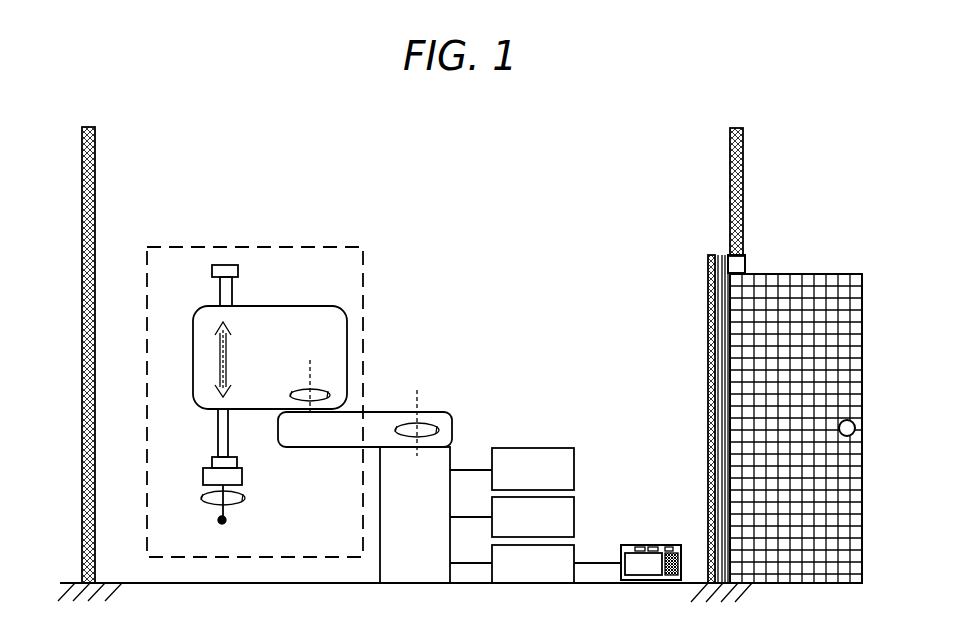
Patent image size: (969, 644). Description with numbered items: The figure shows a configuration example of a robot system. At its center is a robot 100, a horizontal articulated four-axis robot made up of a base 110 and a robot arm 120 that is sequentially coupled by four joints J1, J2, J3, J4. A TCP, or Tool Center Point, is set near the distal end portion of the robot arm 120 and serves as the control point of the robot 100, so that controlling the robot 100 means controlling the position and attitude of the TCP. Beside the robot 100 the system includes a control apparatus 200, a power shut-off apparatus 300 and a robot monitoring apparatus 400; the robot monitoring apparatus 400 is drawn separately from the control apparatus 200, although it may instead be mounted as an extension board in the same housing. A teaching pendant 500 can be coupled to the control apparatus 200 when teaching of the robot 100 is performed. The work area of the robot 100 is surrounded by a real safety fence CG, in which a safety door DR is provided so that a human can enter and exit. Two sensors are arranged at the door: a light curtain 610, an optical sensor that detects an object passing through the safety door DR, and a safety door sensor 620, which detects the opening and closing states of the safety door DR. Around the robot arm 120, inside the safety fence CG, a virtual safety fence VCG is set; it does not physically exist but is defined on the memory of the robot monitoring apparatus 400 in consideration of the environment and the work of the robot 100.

The robot 100 is at (384, 424).
The base 110 is at (446, 479).
The robot arm 120 is at (353, 394).
The control apparatus 200 is at (577, 556).
The power shut-off apparatus 300 is at (577, 510).
The robot monitoring apparatus 400 is at (577, 453).
The teaching pendant 500 is at (640, 545).
The light curtain 610 is at (727, 255).
The safety door sensor 620 is at (750, 266).
The safety door DR is at (790, 272).
The safety fence CG is at (95, 195).
The virtual safety fence VCG is at (300, 246).
The joint J1 is at (412, 403).
The joint J2 is at (312, 375).
The joint J3 is at (232, 360).
The joint J4 is at (240, 476).
The TCP (Tool Center Point) TCP is at (227, 520).